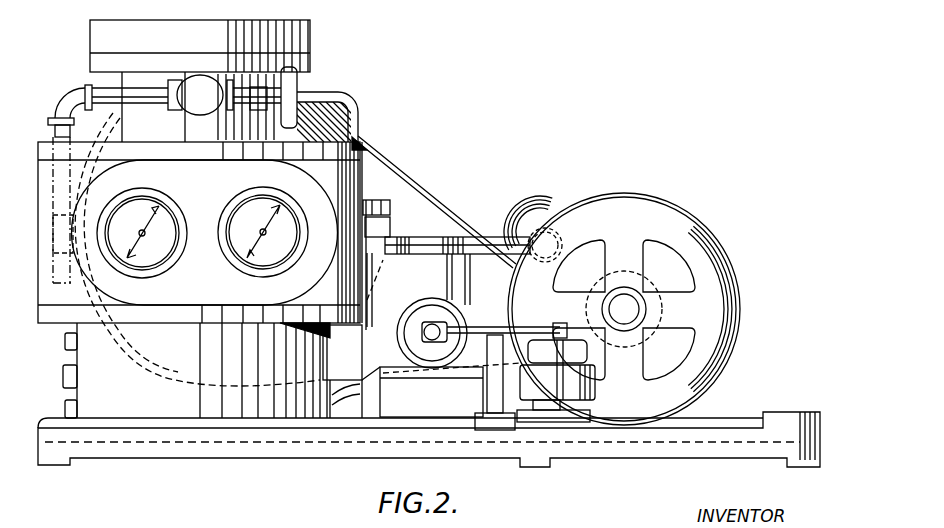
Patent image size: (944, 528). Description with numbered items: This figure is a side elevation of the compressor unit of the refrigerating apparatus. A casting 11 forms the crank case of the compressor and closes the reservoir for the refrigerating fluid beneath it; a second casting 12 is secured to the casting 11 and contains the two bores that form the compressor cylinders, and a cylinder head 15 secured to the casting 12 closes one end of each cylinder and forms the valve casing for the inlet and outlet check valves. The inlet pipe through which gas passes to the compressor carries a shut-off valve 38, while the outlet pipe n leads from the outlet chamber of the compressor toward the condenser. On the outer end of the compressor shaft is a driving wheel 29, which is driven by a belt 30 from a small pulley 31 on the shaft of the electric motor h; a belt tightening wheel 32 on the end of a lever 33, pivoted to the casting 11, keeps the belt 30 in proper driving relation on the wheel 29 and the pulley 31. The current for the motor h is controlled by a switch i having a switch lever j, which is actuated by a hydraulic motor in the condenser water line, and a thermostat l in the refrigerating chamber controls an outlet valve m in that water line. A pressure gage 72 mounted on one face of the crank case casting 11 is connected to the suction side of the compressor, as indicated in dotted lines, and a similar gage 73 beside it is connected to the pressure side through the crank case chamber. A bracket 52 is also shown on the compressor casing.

The cylinder head 15 is at (312, 28).
The second casting 12 is at (312, 64).
The shut-off valve 38 is at (198, 75).
The pipe n is at (338, 94).
The driving wheel 29 is at (327, 128).
The casting 11 is at (357, 177).
The pressure gage 72 is at (137, 203).
The gage 73 is at (253, 203).
The bracket 52 is at (391, 210).
The lever 33 is at (485, 243).
The belt 30 is at (431, 199).
The belt tightening wheel 32 is at (537, 210).
The small pulley 31 is at (646, 277).
The electric motor h is at (400, 335).
The switch lever j is at (479, 325).
The switch i is at (577, 364).
The outlet valve m is at (638, 309).
The thermostat l is at (721, 422).